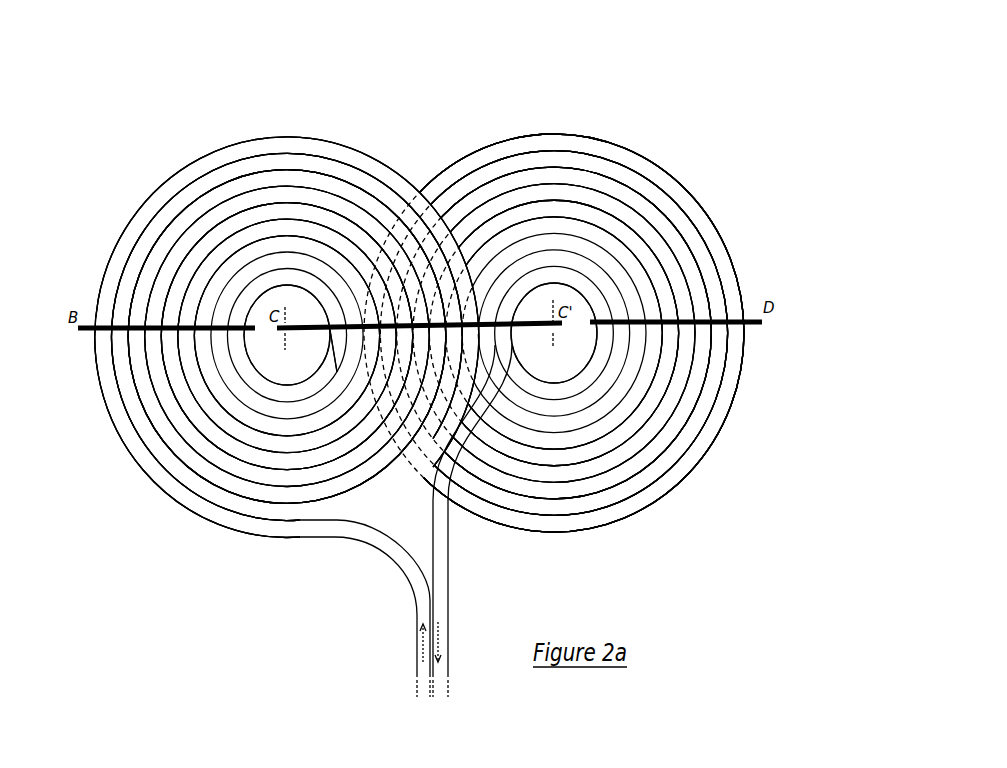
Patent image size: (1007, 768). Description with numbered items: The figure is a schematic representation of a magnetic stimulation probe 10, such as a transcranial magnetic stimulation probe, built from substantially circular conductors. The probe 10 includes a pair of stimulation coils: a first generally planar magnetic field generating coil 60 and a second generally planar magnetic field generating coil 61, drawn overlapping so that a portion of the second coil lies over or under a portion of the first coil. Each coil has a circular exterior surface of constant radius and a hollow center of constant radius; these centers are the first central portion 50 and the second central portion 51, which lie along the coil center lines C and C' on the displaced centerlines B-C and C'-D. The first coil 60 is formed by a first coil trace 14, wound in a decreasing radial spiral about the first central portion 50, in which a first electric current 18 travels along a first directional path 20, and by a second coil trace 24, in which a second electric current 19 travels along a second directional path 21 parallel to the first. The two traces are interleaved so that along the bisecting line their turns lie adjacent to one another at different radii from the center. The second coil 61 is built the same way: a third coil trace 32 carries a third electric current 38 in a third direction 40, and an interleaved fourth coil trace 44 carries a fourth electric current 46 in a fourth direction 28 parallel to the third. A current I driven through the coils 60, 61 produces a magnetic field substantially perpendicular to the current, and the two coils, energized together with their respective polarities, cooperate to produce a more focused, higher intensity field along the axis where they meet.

The magnetic stimulation probe 10 is at (698, 243).
The first coil trace 14 is at (192, 263).
The first electric current 18 is at (227, 192).
The second electric current 19 is at (328, 237).
The first directional path 20 is at (247, 217).
The second directional path 21 is at (360, 243).
The second coil trace 24 is at (305, 223).
The fourth direction 28 is at (542, 223).
The third coil trace 32 is at (707, 290).
The third electric current 38 is at (647, 252).
The third direction 40 is at (628, 233).
The fourth coil trace 44 is at (523, 227).
The fourth electric current 46 is at (562, 223).
The first central portion 50 is at (262, 312).
The second central portion 51 is at (570, 342).
The first generally planar magnetic field generating coil 60 is at (198, 412).
The second generally planar magnetic field generating coil 61 is at (645, 425).
The current I is at (423, 640).